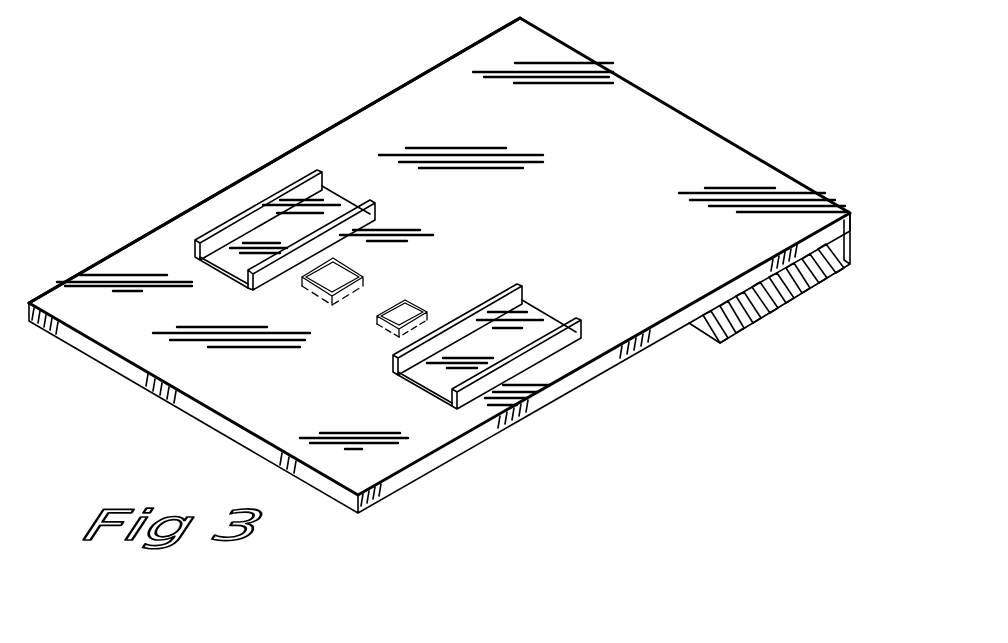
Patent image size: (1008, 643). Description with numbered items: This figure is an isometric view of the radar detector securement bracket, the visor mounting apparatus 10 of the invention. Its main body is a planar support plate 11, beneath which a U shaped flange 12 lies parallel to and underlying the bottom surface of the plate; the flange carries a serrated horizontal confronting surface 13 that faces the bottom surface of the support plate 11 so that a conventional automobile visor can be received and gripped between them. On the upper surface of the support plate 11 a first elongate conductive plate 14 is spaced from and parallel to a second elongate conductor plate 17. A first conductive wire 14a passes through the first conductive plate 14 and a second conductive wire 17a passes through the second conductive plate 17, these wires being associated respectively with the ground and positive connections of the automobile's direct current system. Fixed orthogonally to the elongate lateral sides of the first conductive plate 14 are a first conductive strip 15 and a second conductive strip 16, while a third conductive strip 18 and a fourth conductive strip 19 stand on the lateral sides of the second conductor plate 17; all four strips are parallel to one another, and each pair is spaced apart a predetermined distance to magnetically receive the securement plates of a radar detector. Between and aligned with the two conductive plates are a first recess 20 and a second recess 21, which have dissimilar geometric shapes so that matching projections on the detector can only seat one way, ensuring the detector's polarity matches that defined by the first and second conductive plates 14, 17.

The visor mounting apparatus 10 is at (737, 104).
The planar support plate 11 is at (416, 79).
The U shaped flange 12 is at (769, 288).
The serrated horizontal confronting surface 13 is at (782, 290).
The first elongate conductive plate 14 is at (317, 189).
The first conductive wire 14a is at (378, 135).
The first conductive strip 15 is at (266, 198).
The second conductive strip 16 is at (383, 215).
The second elongate conductor plate 17 is at (520, 279).
The second conductive wire 17a is at (587, 221).
The third conductive strip 18 is at (512, 284).
The fourth conductive strip 19 is at (597, 321).
The first recess 20 is at (349, 270).
The second recess 21 is at (409, 305).